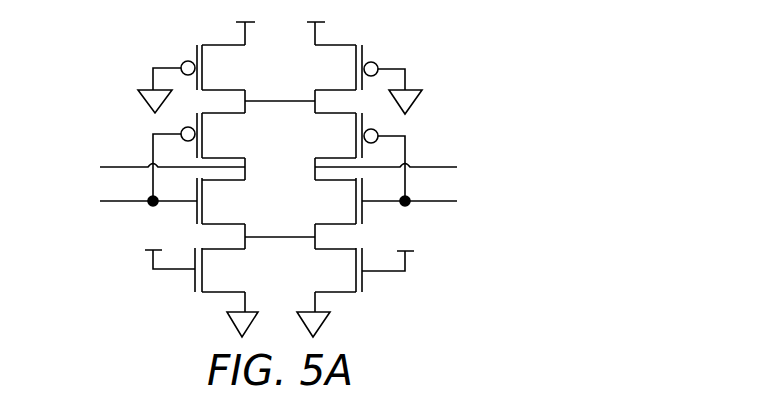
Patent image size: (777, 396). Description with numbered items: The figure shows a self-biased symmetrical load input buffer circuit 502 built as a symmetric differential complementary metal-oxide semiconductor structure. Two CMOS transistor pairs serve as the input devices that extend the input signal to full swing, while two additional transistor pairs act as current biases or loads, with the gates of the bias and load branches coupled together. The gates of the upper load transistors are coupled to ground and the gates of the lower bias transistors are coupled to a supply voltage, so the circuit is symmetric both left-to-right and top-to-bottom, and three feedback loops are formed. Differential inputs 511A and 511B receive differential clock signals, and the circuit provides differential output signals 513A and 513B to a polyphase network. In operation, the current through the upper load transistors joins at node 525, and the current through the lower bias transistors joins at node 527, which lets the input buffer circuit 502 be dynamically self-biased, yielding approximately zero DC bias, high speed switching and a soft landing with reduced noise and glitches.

The self-biased symmetrical load input buffer circuit 502 is at (276, 168).
The node 525 is at (282, 100).
The node 527 is at (281, 236).
The differential output signal 513B is at (117, 167).
The differential input 511A is at (117, 201).
The differential output signal 513A is at (440, 167).
The differential input 511B is at (440, 201).